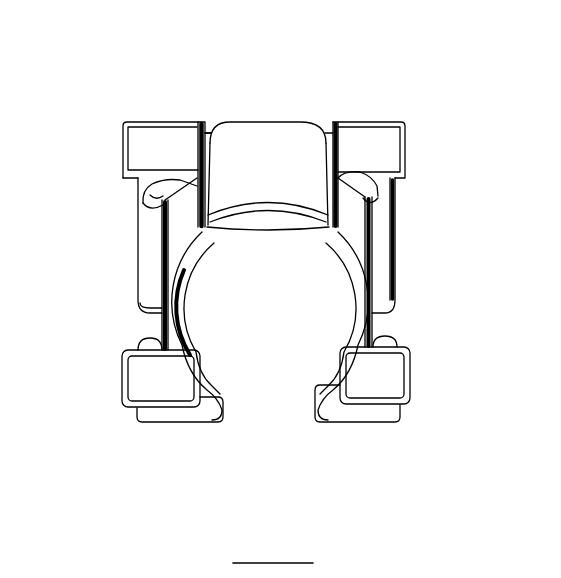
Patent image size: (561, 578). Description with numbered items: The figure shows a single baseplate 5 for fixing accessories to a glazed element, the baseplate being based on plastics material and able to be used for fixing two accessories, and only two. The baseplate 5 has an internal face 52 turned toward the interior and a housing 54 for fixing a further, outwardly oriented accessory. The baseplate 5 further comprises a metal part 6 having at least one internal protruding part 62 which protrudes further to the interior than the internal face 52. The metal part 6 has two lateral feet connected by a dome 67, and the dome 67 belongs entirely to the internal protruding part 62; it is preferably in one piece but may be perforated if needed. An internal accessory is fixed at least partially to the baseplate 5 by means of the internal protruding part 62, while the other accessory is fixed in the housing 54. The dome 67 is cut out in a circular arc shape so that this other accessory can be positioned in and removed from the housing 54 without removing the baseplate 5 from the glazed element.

The baseplate 5 is at (113, 80).
The metal part 6 is at (247, 178).
The internal face 52 is at (390, 137).
The housing 54 is at (283, 316).
The internal protruding part 62 is at (267, 138).
The dome 67 is at (250, 135).